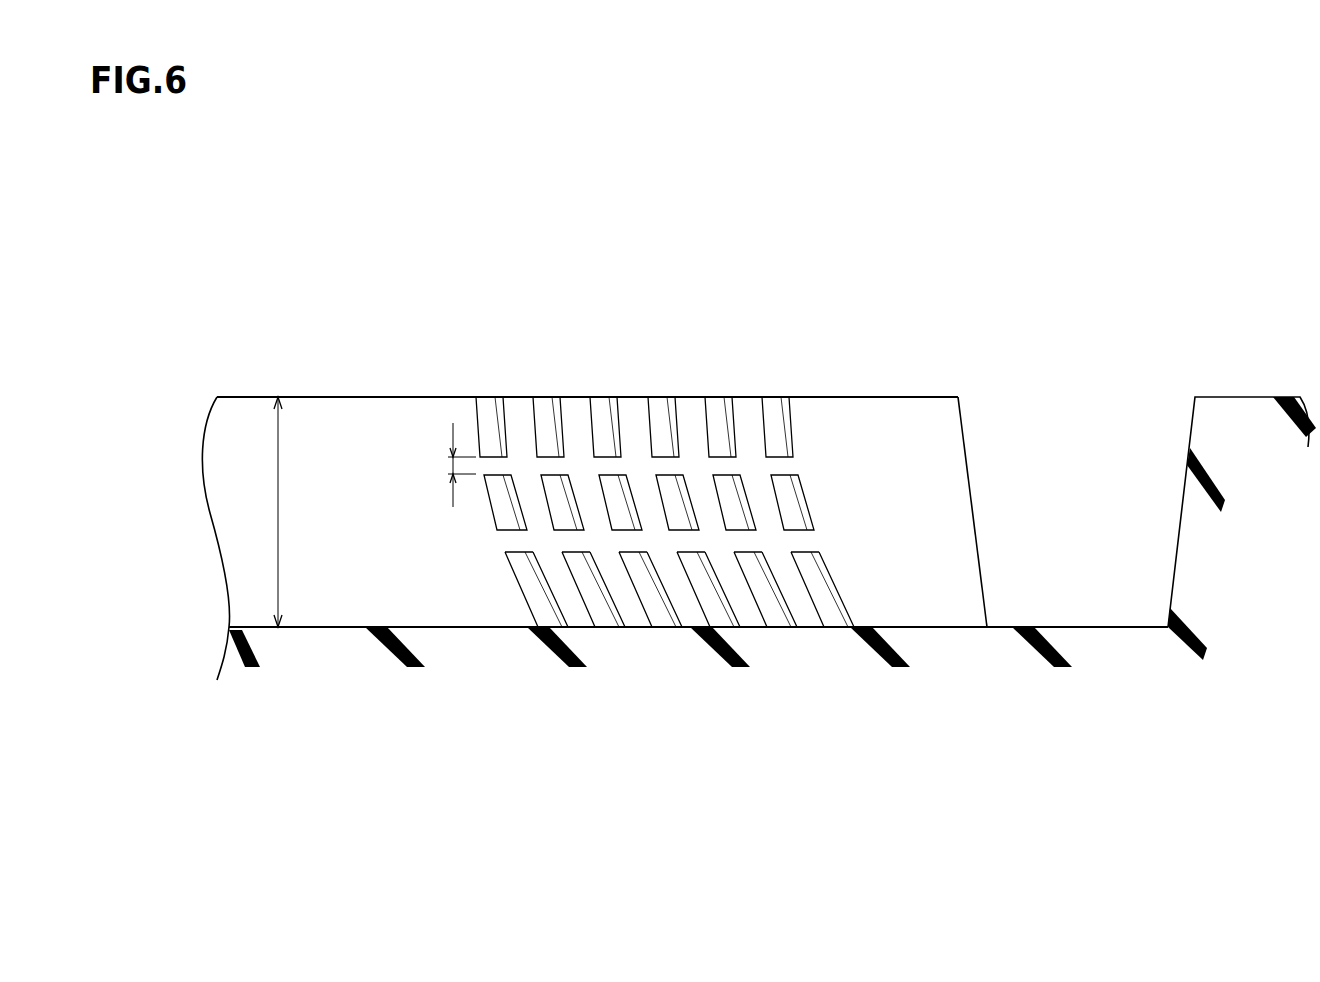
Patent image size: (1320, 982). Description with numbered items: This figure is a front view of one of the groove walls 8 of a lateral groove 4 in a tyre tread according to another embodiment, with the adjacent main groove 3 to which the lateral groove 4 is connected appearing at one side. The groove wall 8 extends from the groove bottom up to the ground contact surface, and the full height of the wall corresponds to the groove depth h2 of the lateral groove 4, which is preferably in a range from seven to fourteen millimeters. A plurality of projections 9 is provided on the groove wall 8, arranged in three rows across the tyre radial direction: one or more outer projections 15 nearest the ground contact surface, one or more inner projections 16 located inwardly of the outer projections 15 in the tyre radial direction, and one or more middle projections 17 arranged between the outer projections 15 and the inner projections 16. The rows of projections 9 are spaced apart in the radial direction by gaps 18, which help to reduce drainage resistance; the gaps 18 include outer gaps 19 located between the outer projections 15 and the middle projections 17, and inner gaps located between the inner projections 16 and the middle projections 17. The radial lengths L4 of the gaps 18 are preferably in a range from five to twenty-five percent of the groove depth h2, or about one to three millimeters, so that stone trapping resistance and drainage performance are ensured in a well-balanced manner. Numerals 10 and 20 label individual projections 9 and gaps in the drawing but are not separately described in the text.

The main groove 3 is at (1067, 432).
The lateral groove 4 is at (386, 375).
The groove wall 8 is at (327, 435).
The projections 9 is at (717, 388).
The fin 10 is at (680, 505).
The outer projections 15 is at (785, 422).
The inner projections 16 is at (823, 590).
The middle projections 17 is at (798, 500).
The gaps 18 is at (630, 540).
The outer gaps 19 is at (550, 467).
The third row fin 20 is at (575, 540).
The groove depth h2 is at (278, 513).
The lengths of the gaps L4 is at (453, 466).